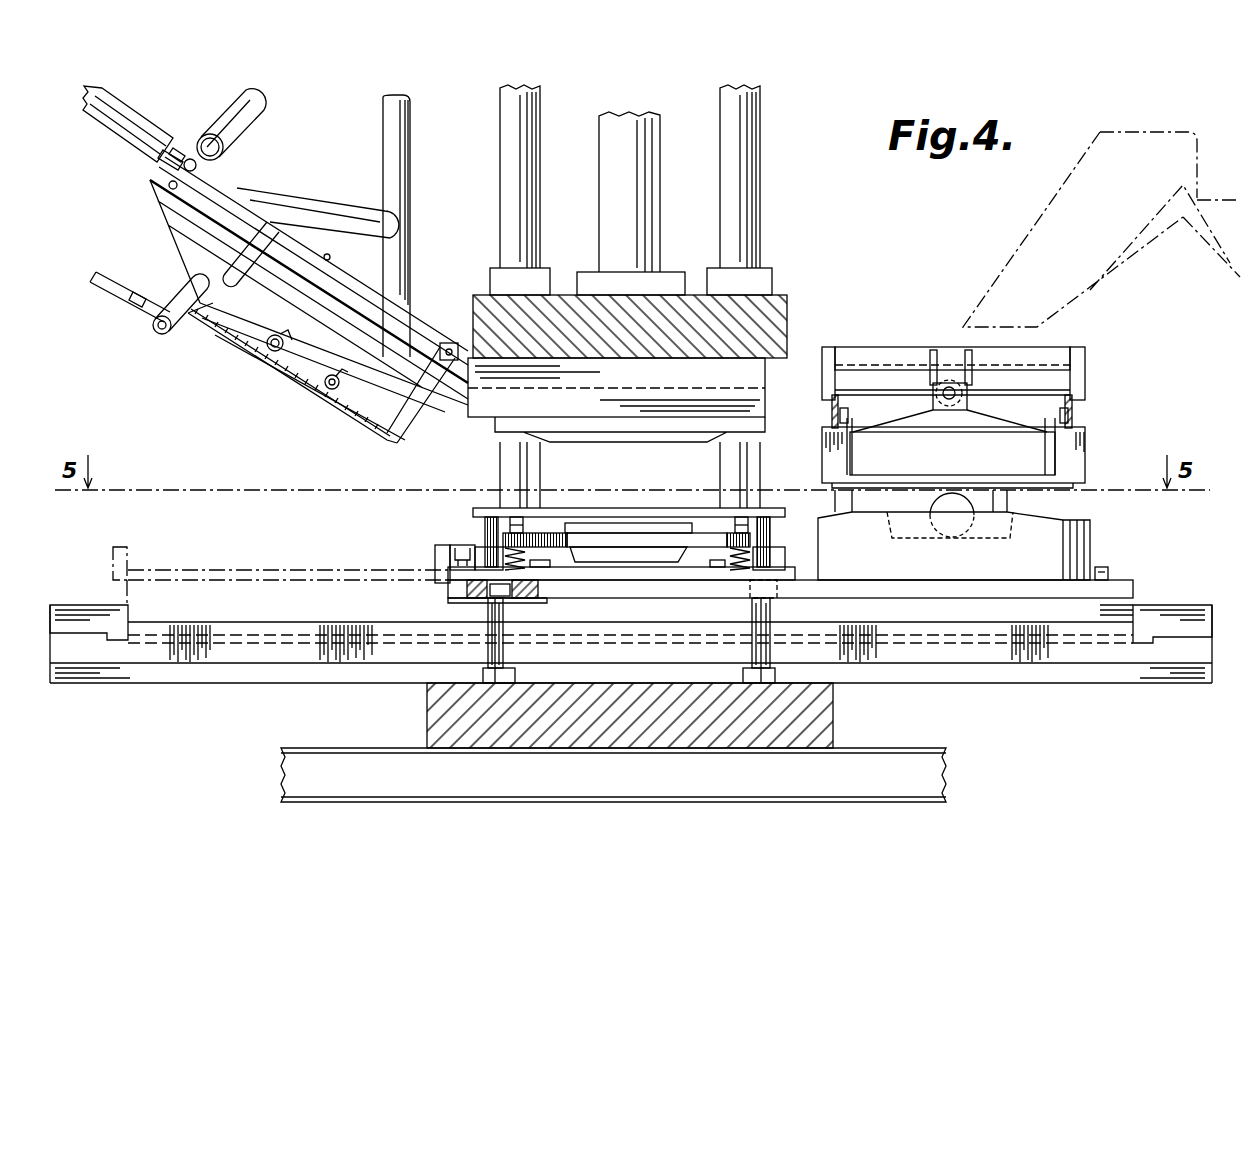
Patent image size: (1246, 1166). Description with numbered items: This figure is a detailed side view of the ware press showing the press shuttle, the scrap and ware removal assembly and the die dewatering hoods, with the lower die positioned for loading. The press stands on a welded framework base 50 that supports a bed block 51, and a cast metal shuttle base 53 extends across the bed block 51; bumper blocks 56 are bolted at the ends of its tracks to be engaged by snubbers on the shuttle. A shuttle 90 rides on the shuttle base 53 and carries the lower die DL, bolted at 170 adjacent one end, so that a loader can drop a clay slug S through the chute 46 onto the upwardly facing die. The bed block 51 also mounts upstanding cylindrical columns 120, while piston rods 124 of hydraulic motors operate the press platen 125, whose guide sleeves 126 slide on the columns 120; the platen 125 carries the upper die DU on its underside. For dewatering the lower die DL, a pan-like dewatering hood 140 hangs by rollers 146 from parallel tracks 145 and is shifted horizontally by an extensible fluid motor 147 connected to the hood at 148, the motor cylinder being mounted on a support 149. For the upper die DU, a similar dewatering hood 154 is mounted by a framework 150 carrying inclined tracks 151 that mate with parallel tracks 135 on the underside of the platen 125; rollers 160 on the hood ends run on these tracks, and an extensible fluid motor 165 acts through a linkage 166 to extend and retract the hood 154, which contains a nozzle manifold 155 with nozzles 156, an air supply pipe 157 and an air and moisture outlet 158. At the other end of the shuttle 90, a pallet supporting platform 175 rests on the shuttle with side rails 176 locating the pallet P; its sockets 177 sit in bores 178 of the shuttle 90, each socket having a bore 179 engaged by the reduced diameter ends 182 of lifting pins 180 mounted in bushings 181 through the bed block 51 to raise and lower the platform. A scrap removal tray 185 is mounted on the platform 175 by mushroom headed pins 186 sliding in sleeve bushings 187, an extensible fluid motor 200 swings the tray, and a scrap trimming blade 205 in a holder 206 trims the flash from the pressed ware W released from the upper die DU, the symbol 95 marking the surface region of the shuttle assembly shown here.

The chute 46 is at (1020, 252).
The welded framework base 50 is at (890, 760).
The bed block 51 is at (833, 720).
The shuttle base 53 is at (1095, 685).
The bumper blocks 56 is at (75, 605).
The shuttle 90 is at (1120, 582).
The beam top surface 95 is at (395, 622).
The cylindrical columns 120 is at (500, 157).
The piston rods 124 is at (599, 173).
The press platen 125 is at (787, 310).
The guide sleeves 126 is at (490, 280).
The parallel tracks 135 is at (740, 400).
The dewatering hood 140 is at (1060, 470).
The parallel tracks 145 is at (832, 405).
The rollers 146 is at (848, 415).
The extensible fluid motor 147 is at (935, 378).
The connection to hood 148 is at (968, 405).
The support 149 is at (1040, 352).
The framework 150 is at (252, 118).
The inclined tracks 151 is at (330, 258).
The dewatering hood 154 is at (335, 434).
The nozzle manifold 155 is at (300, 380).
The nozzles 156 is at (270, 355).
The pipe 157 is at (178, 283).
The air and moisture outlet 158 is at (196, 333).
The rollers 160 is at (455, 342).
The extensible fluid motor 165 is at (115, 138).
The linkage 166 is at (232, 190).
The bolting of lower die 170 is at (1105, 570).
The pallet supporting platform 175 is at (450, 565).
The side rails 176 is at (548, 567).
The sockets 177 is at (500, 598).
The bores 178 is at (503, 610).
The bore 179 is at (525, 565).
The lifting pins 180 is at (488, 662).
The bushings 181 is at (515, 678).
The reduced diameter ends 182 is at (488, 640).
The scrap removal tray 185 is at (473, 512).
The mushroom headed pins 186 is at (487, 540).
The sleeve bushings 187 is at (785, 560).
The extensible fluid motor 200 is at (440, 548).
The scrap trimming blade 205 is at (650, 533).
The holder 206 is at (545, 530).
The upper die DU is at (765, 428).
The lower die DL is at (1090, 526).
The workpiece W is at (630, 523).
The pallet P is at (621, 584).
The clay slug S is at (975, 515).